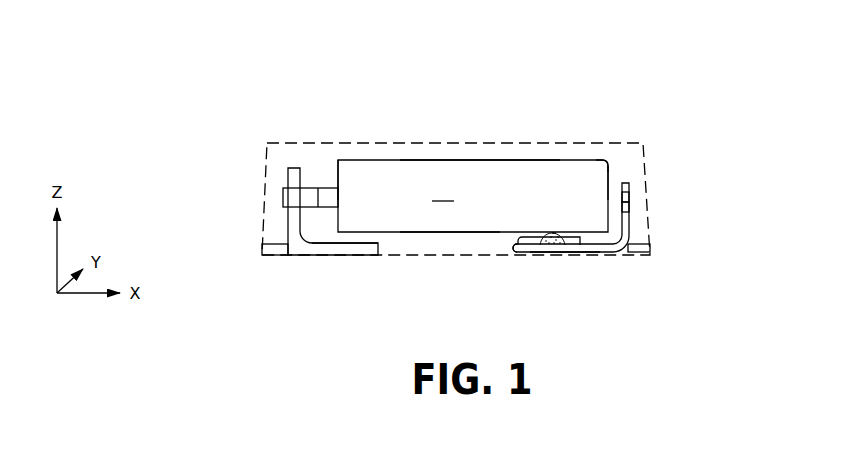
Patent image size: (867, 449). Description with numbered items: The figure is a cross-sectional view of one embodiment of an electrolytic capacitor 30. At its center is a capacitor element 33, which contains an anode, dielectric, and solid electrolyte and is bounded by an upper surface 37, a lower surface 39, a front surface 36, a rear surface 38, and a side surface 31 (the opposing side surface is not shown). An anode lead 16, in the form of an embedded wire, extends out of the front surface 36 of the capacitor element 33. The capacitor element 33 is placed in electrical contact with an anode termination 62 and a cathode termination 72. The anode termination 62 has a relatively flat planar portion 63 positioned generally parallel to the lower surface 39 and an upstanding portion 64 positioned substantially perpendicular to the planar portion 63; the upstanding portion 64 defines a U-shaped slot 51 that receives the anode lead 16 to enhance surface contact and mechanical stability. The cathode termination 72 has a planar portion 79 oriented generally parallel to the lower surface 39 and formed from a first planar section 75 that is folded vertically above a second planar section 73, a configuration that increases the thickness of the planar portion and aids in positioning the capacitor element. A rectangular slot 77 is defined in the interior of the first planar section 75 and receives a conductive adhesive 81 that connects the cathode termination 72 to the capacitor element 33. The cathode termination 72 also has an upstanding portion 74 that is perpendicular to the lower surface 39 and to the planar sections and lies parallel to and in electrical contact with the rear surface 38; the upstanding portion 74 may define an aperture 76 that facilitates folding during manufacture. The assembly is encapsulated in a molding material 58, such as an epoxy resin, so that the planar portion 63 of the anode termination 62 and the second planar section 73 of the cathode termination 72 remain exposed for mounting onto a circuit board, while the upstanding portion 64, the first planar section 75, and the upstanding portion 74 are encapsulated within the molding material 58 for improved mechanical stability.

The capacitor 30 is at (525, 87).
The anode lead 16 is at (318, 195).
The side surface 31 is at (473, 196).
The capacitor element 33 is at (592, 170).
The front surface 36 is at (338, 165).
The upper surface 37 is at (447, 160).
The rear surface 38 is at (610, 166).
The lower surface 39 is at (440, 233).
The slot 51 is at (295, 200).
The molding material 58 is at (642, 158).
The anode termination 62 is at (291, 258).
The planar portion 63 is at (332, 248).
The upstanding portion 64 is at (295, 177).
The cathode termination 72 is at (612, 256).
The second planar section 73 is at (563, 249).
The upstanding portion 74 is at (624, 190).
The first planar section 75 is at (524, 242).
The aperture 76 is at (624, 213).
The slot 77 is at (568, 234).
The planar portion 79 is at (515, 242).
The conductive adhesive 81 is at (558, 236).